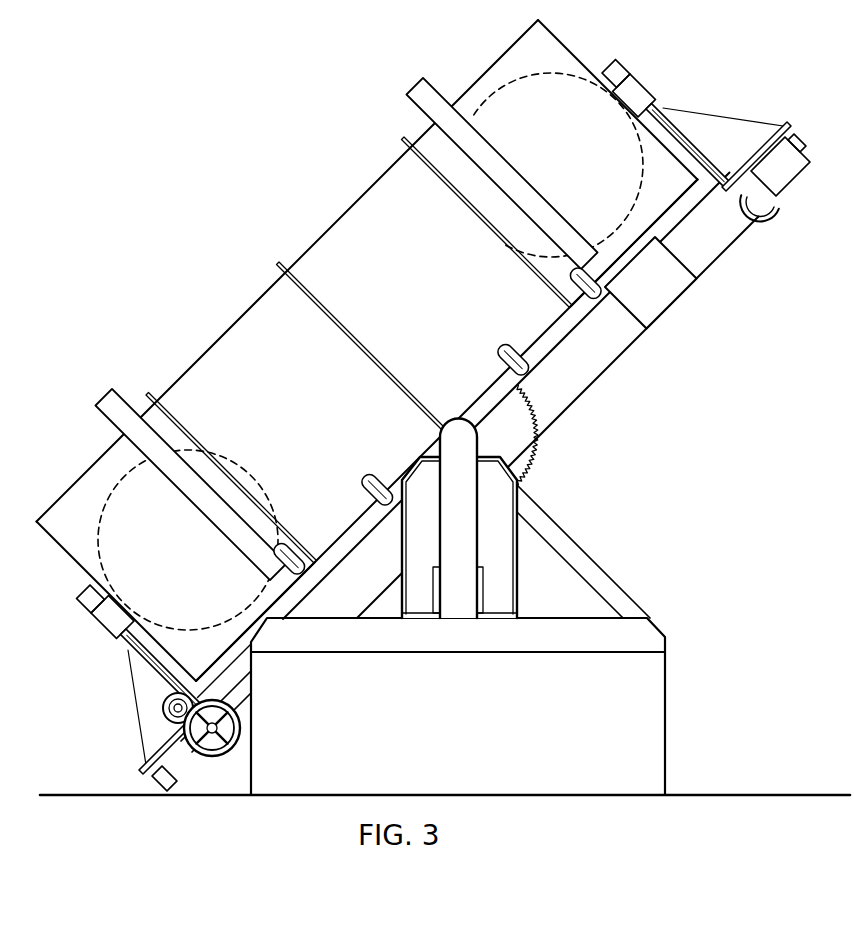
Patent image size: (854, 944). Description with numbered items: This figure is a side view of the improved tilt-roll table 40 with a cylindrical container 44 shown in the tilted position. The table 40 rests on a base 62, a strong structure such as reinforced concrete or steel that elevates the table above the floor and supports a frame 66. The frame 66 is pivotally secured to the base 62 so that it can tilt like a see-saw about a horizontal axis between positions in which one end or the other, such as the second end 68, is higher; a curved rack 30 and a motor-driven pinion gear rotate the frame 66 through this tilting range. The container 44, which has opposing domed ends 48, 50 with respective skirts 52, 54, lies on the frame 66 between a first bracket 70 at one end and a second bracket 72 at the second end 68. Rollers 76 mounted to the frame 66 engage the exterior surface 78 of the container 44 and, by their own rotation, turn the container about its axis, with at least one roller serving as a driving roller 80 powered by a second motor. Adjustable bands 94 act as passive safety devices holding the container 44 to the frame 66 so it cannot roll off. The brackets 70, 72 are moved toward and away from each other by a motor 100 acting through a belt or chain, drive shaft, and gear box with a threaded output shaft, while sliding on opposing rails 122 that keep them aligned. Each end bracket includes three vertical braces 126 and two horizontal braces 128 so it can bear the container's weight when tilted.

The curved rack 30 is at (512, 445).
The tilt-roll table 40 is at (648, 565).
The cylindrical container 44 is at (245, 312).
The domed end 48 is at (98, 563).
The domed end 50 is at (577, 66).
The skirt 52 is at (58, 496).
The skirt 54 is at (523, 33).
The base 62 is at (667, 752).
The frame 66 is at (575, 400).
The second end 68 is at (702, 270).
The first bracket 70 is at (150, 689).
The second bracket 72 is at (708, 132).
The roller 76 is at (576, 301).
The exterior surface 78 is at (280, 415).
The driving roller 80 is at (363, 478).
The adjustable band 94 is at (432, 107).
The motor 100 is at (165, 718).
The rail 122 is at (180, 779).
The vertical brace 126 is at (668, 117).
The horizontal brace 128 is at (762, 138).